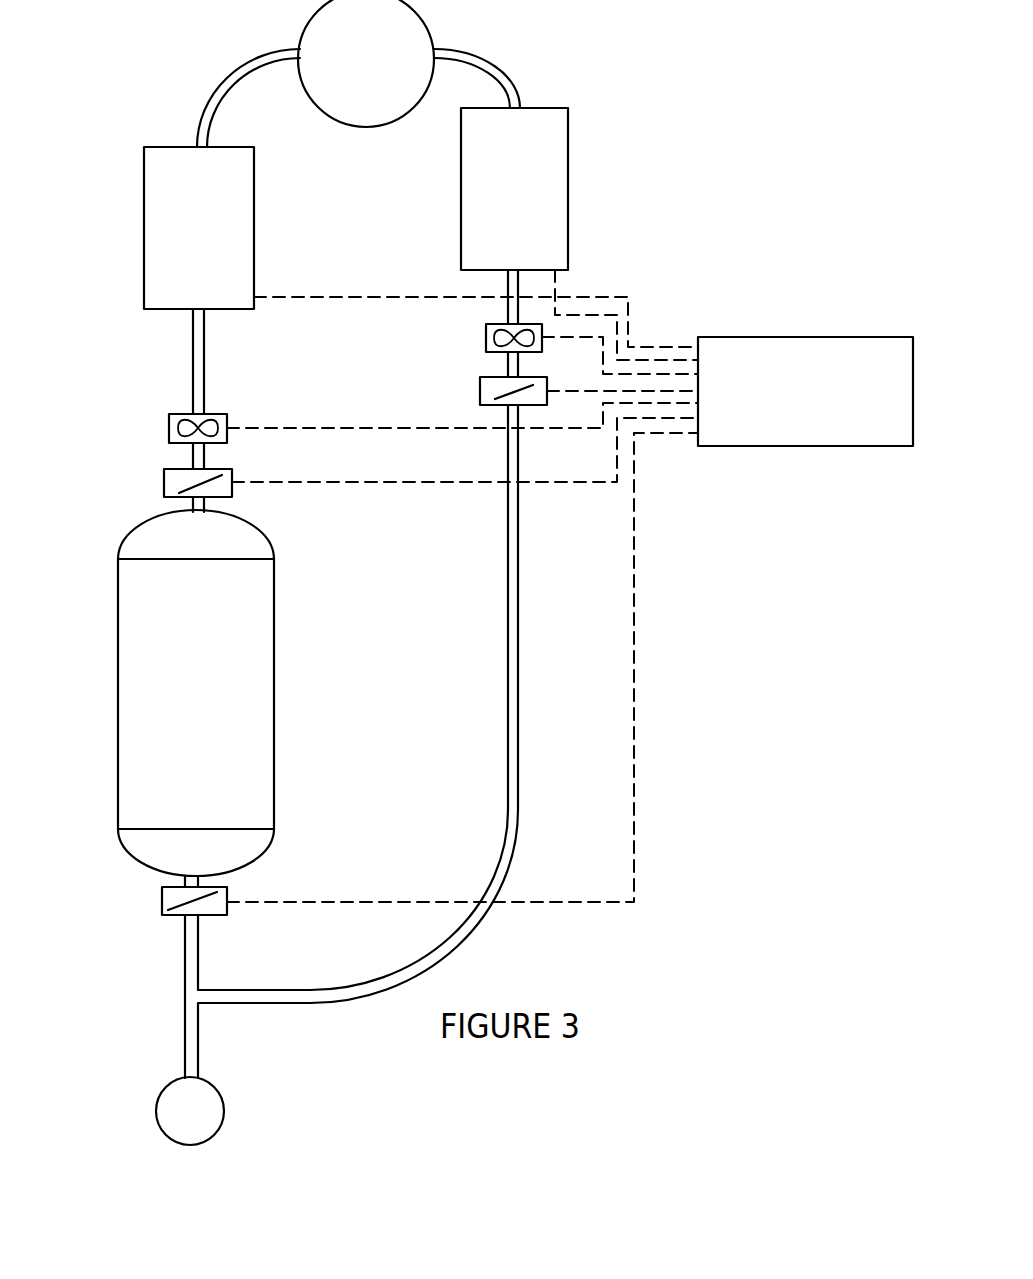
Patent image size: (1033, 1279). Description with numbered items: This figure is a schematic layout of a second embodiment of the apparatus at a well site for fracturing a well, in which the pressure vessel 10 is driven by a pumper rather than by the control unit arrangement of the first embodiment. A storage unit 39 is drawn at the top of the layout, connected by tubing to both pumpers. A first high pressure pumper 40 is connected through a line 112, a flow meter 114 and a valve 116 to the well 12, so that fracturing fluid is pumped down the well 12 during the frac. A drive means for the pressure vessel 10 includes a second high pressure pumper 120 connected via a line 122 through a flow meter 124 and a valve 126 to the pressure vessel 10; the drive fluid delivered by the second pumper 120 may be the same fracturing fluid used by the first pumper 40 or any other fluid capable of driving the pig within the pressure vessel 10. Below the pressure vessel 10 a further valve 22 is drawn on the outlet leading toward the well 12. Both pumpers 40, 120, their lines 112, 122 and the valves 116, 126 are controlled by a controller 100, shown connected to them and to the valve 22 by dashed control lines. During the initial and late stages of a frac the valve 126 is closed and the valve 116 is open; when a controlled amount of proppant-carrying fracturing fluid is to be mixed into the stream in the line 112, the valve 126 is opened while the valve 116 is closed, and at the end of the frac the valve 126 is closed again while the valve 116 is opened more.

The pressure vessel 10 is at (99, 575).
The well 12 is at (224, 1105).
The valve 22 is at (162, 898).
The storage 39 is at (433, 32).
The first high pressure pumper 40 is at (568, 158).
The controller 100 is at (737, 446).
The line 112 is at (508, 283).
The flow meter 114 is at (486, 338).
The valve 116 is at (480, 393).
The second high pressure pumper 120 is at (144, 283).
The line 122 is at (193, 360).
The flow meter 124 is at (169, 422).
The valve 126 is at (164, 480).